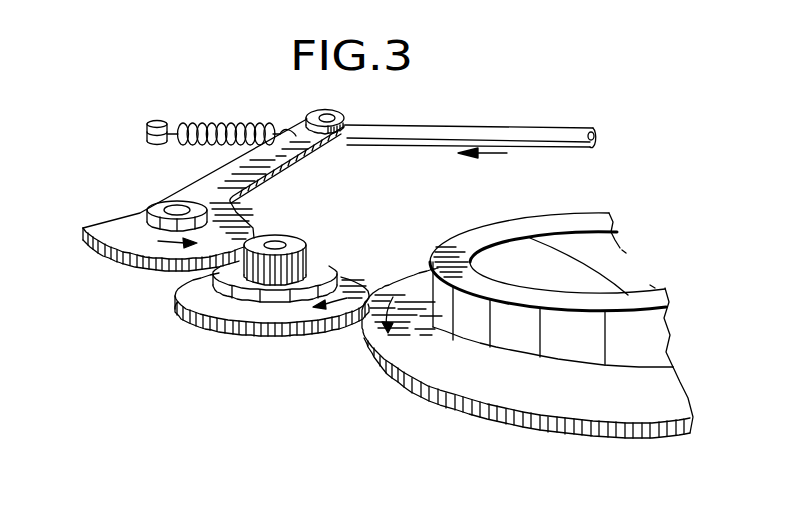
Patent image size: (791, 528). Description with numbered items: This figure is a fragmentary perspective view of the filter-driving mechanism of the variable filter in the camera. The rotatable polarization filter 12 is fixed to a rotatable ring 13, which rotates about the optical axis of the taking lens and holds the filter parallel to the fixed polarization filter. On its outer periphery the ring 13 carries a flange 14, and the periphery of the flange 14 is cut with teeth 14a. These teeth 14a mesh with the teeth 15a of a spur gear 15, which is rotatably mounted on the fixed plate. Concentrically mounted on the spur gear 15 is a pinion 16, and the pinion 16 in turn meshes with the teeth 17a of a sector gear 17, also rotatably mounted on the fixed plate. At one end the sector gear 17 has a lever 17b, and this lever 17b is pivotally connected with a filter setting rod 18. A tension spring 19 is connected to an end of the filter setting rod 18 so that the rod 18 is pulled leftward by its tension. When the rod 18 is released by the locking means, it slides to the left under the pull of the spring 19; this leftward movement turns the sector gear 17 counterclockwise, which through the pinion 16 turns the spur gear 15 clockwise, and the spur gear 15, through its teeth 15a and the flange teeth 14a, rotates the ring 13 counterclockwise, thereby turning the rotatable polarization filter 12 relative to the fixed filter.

The rotatable polarization filter 12 is at (557, 245).
The rotatable ring 13 is at (513, 342).
The flange 14 is at (552, 403).
The teeth 14a is at (392, 373).
The spur gear 15 is at (217, 300).
The teeth 15a is at (291, 323).
The pinion 16 is at (296, 245).
The sector gear 17 is at (136, 227).
The teeth 17a is at (125, 263).
The lever 17b is at (268, 162).
The filter setting rod 18 is at (432, 133).
The tension spring 19 is at (223, 122).